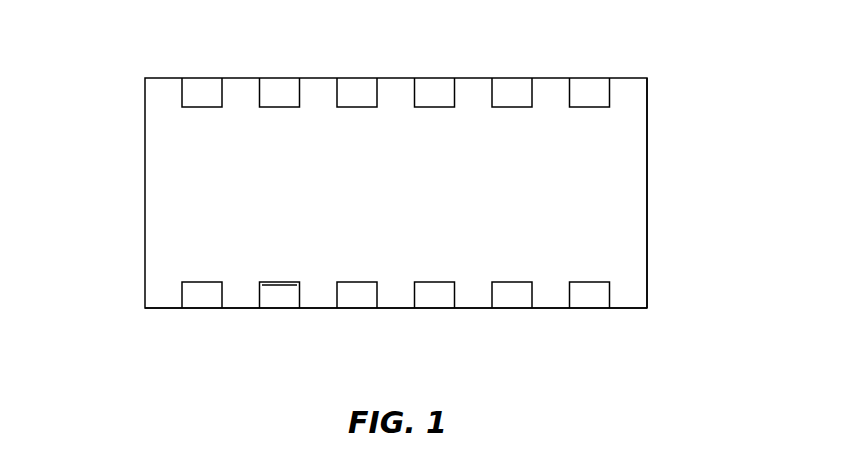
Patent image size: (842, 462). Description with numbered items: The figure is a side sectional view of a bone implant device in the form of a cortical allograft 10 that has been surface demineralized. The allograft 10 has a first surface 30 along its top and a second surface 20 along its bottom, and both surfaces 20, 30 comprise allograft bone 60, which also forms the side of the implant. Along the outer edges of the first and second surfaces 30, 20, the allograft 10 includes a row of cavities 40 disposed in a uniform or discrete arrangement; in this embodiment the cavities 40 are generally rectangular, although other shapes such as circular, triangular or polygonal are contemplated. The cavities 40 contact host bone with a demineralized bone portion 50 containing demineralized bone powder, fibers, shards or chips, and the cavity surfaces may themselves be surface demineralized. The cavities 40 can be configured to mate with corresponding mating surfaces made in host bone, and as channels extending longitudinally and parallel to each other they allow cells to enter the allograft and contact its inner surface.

The cortical allograft 10 is at (145, 157).
The second surface 20 is at (153, 308).
The first surface 30 is at (242, 78).
The cavities 40 is at (280, 308).
The demineralized bone portion 50 is at (282, 293).
The allograft bone 60 is at (647, 150).